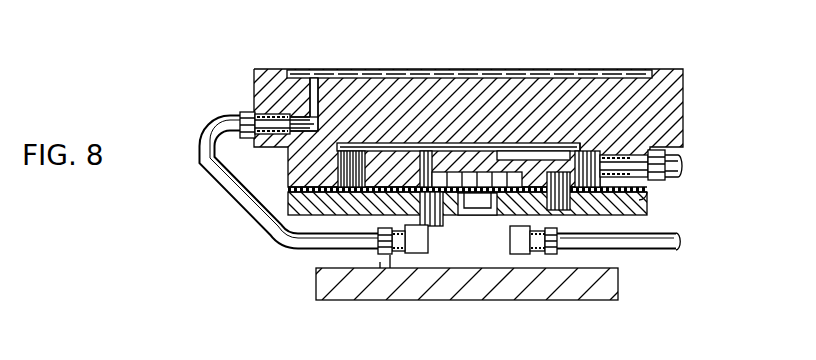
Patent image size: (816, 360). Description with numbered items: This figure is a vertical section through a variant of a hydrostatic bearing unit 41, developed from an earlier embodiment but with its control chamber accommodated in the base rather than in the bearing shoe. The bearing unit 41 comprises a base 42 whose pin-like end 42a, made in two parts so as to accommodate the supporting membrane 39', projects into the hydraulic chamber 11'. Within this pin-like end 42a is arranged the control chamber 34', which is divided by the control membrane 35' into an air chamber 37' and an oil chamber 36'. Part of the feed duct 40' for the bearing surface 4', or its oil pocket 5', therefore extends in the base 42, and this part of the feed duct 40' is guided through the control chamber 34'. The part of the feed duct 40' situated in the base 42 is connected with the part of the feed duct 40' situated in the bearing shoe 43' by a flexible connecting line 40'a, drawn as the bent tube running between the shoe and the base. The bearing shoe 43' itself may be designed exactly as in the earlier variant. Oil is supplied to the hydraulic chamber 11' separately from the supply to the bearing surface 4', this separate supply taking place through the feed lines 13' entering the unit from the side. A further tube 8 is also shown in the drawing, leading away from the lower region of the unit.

The bearing unit 41 is at (700, 82).
The bearing surface 4' is at (469, 44).
The oil pocket 5' is at (470, 45).
The bearing shoe 43' is at (259, 80).
The pin-like end 42a is at (370, 170).
The air chamber 37' is at (412, 149).
The control chamber 34' is at (477, 141).
The control membrane 35' is at (533, 160).
The hydraulic chamber 11' is at (585, 149).
The feed lines 13' is at (664, 146).
The supporting membrane 39' is at (498, 200).
The tube 8 is at (664, 235).
The feed duct 40' is at (353, 202).
The flexible connecting line 40'a is at (293, 204).
The oil chamber 36' is at (493, 242).
The base 42 is at (400, 278).